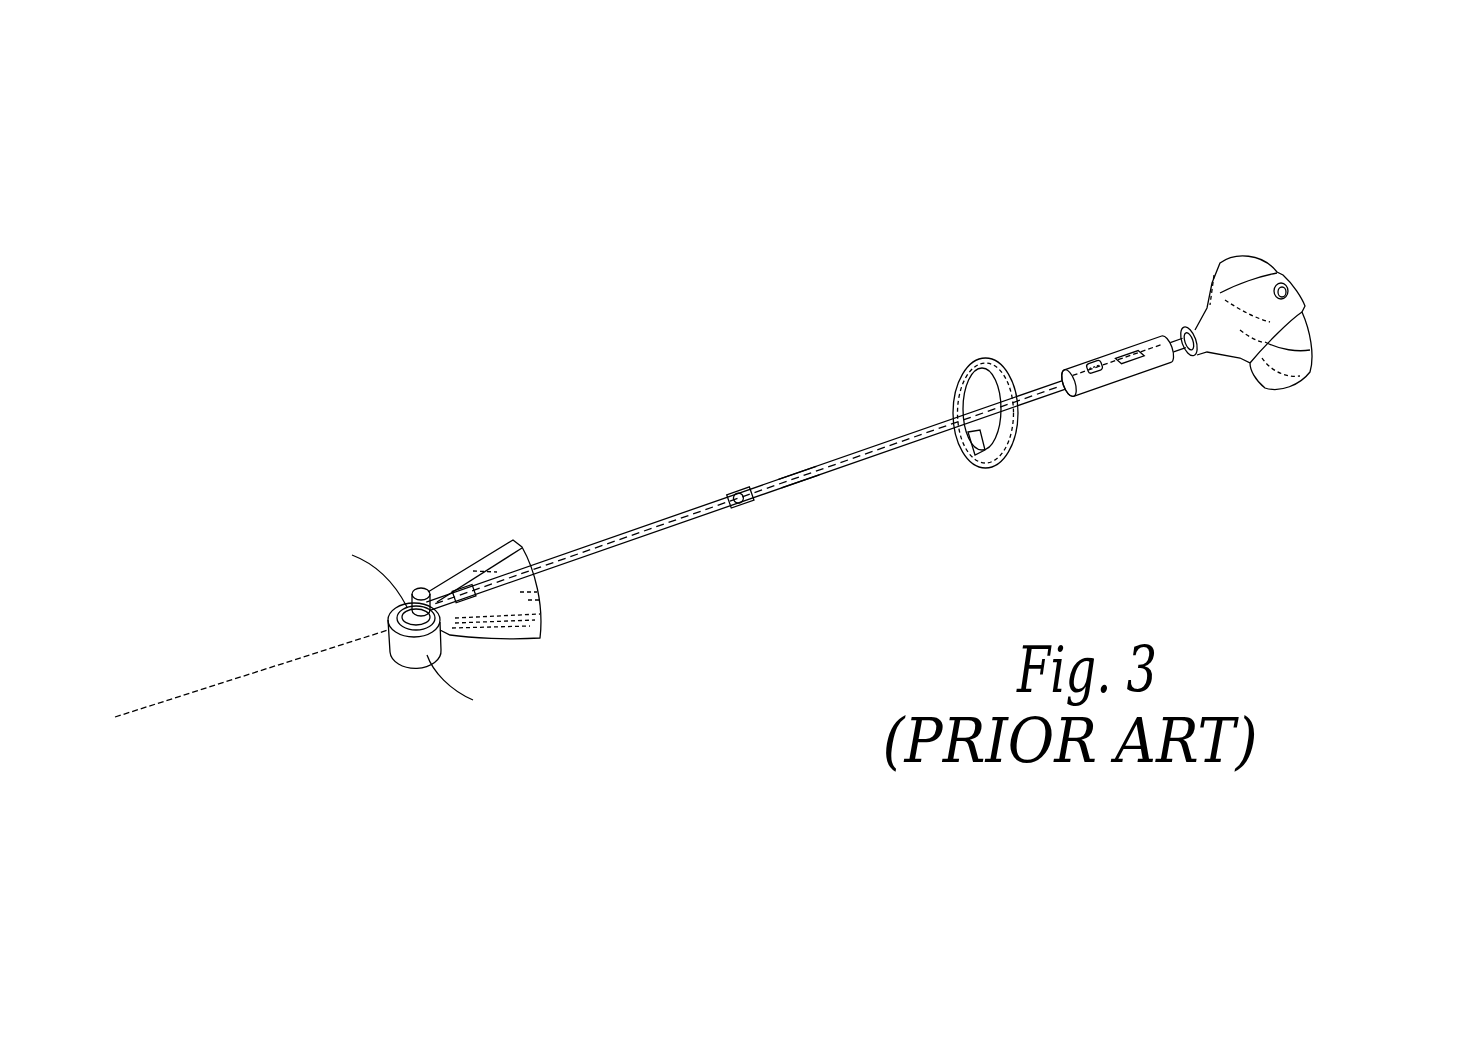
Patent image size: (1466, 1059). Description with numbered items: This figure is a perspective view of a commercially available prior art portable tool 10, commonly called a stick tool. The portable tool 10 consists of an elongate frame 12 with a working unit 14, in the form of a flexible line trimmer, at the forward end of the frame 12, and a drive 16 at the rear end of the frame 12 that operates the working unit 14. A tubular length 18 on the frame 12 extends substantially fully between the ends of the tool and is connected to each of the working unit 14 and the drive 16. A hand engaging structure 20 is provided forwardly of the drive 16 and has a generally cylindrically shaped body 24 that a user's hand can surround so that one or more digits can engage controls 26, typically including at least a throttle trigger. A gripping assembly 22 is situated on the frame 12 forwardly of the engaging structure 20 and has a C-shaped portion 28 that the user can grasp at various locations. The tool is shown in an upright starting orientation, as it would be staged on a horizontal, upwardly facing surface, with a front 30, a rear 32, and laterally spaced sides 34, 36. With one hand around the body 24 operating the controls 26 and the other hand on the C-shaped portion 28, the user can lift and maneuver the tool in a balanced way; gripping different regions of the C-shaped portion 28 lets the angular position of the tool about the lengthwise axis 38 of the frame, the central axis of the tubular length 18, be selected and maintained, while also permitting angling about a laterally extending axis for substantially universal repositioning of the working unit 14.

The portable tool 10 is at (1373, 236).
The elongate frame 12 is at (855, 467).
The working unit 14 is at (496, 660).
The drive 16 is at (1261, 421).
The tubular length 18 is at (770, 495).
The hand engaging structure 20 is at (1120, 406).
The gripping assembly 22 is at (985, 335).
The body 24 is at (1127, 350).
The controls 26 is at (1095, 340).
The C-shaped portion 28 is at (1002, 470).
The front 30 is at (387, 636).
The rear 32 is at (1303, 283).
The side 34 is at (798, 474).
The side 36 is at (798, 487).
The lengthwise axis 38 is at (195, 690).